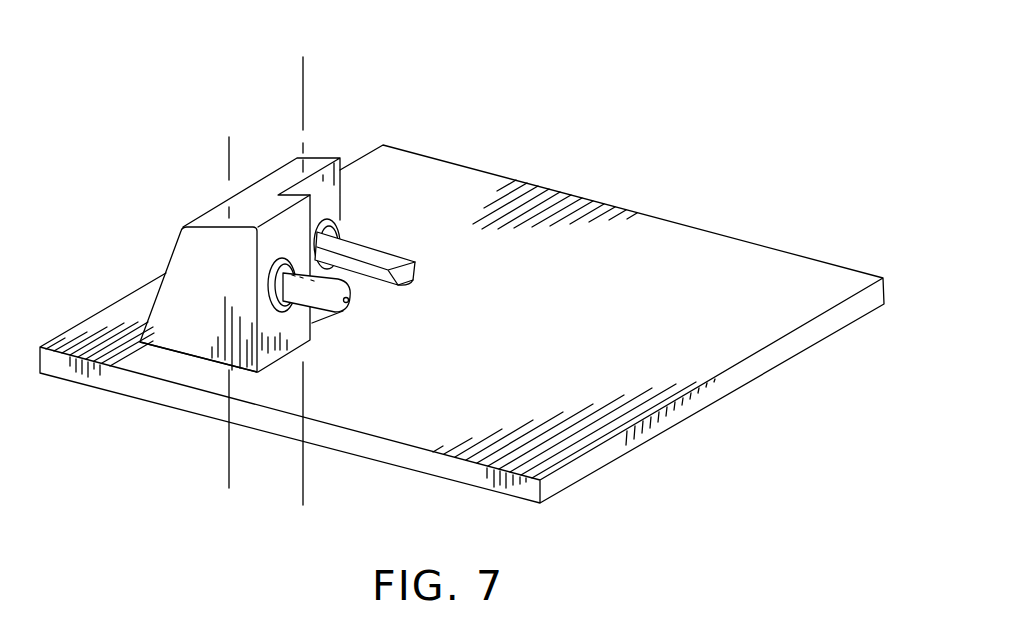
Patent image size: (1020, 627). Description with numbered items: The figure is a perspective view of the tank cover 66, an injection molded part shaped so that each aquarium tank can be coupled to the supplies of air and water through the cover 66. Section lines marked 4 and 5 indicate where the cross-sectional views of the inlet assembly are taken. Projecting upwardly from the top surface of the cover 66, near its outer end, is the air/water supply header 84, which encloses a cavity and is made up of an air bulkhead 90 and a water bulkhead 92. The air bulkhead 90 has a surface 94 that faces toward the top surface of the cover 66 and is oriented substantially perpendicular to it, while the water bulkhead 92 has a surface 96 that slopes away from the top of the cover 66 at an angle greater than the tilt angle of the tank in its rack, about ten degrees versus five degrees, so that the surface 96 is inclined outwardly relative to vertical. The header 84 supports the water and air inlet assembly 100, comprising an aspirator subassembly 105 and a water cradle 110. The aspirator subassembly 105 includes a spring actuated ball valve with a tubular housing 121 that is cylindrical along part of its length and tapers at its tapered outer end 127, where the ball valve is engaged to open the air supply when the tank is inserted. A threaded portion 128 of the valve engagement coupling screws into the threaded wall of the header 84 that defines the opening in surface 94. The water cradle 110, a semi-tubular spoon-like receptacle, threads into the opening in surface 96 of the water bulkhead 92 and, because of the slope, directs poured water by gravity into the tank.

The cover 66 is at (609, 218).
The water and air inlet assembly 100 is at (186, 186).
The air/water supply header 84 is at (180, 303).
The air bulkhead 90 is at (168, 365).
The water bulkhead 92 is at (333, 140).
The surface 94 is at (312, 338).
The surface 96 is at (334, 195).
The aspirator subassembly 105 is at (340, 312).
The water cradle 110 is at (380, 236).
The tubular housing 121 is at (277, 292).
The tapered outer end 127 is at (345, 287).
The threaded portion 128 is at (273, 272).
The section line 4- 4 is at (257, 468).
The section line 5- 5 is at (332, 487).